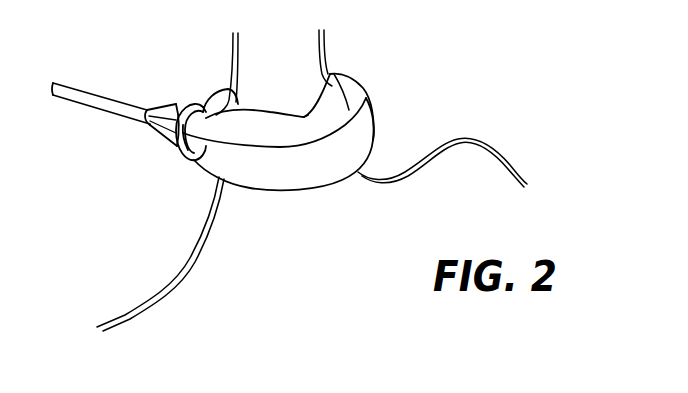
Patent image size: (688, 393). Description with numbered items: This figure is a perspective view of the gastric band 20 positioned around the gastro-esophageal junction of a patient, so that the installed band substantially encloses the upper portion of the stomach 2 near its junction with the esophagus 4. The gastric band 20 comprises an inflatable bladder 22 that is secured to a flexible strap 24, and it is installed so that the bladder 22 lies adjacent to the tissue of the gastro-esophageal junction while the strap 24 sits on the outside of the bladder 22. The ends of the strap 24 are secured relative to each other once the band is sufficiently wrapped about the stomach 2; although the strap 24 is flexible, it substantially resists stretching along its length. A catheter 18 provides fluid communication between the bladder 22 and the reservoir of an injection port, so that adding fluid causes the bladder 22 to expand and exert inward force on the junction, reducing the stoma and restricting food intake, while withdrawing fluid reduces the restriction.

The stomach 2 is at (493, 143).
The esophagus 4 is at (255, 67).
The catheter 18 is at (82, 103).
The gastric band 20 is at (320, 104).
The inflatable bladder 22 is at (347, 100).
The flexible strap 24 is at (373, 128).